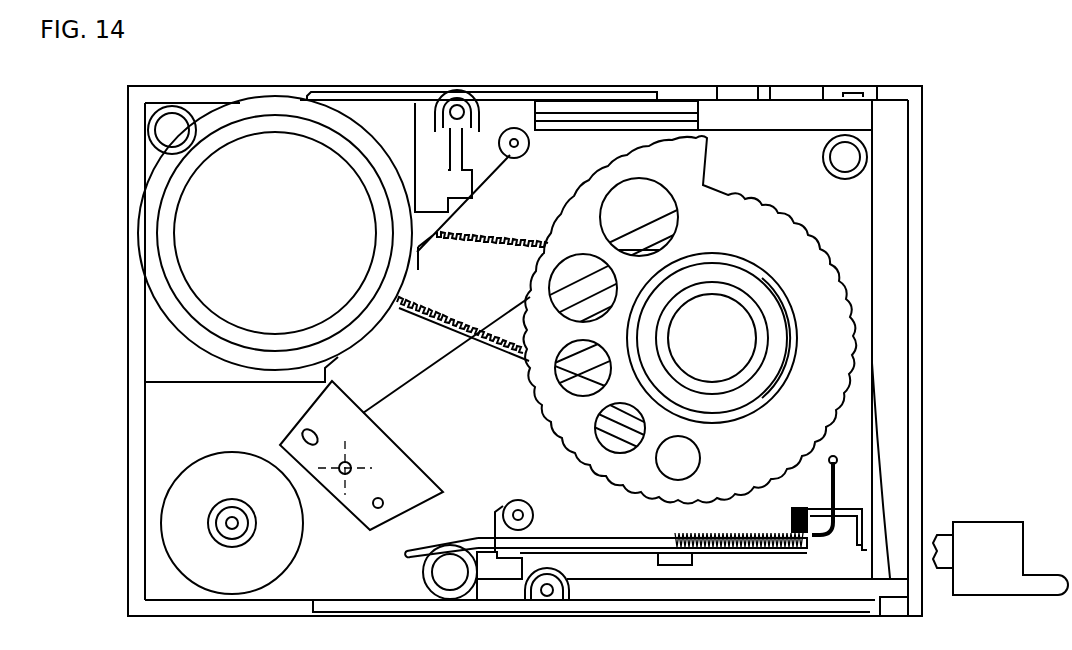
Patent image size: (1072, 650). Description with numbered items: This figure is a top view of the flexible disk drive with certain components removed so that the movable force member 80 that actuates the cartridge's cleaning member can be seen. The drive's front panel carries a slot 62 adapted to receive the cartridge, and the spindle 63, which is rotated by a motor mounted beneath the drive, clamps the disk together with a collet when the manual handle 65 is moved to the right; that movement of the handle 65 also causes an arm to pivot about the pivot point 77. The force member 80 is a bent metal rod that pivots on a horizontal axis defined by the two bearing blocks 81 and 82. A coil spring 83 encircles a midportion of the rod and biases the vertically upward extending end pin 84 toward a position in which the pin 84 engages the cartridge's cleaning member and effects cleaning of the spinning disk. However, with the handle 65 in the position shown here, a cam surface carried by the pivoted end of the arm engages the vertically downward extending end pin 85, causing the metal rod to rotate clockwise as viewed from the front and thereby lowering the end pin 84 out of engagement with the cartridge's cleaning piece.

The slot 62 is at (884, 386).
The spindle 63 is at (757, 390).
The manual handle 65 is at (993, 586).
The pivot point 77 is at (346, 462).
The movable force member 80 is at (831, 494).
The bearing block 81 is at (503, 527).
The bearing block 82 is at (796, 524).
The coil spring 83 is at (700, 533).
The end pin 84 is at (837, 458).
The end pin 85 is at (408, 554).